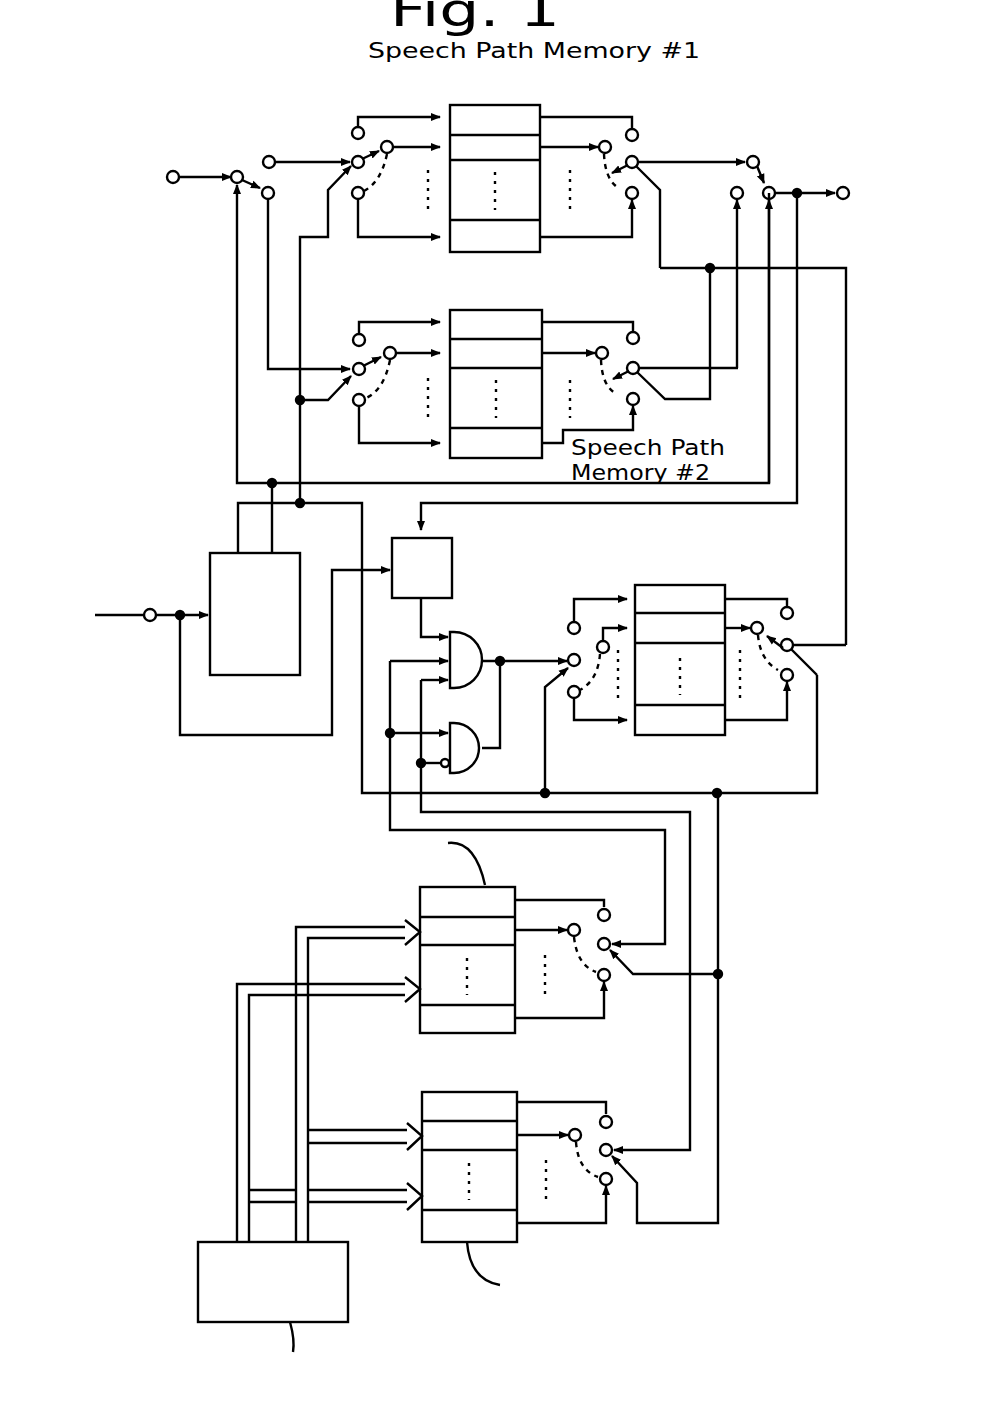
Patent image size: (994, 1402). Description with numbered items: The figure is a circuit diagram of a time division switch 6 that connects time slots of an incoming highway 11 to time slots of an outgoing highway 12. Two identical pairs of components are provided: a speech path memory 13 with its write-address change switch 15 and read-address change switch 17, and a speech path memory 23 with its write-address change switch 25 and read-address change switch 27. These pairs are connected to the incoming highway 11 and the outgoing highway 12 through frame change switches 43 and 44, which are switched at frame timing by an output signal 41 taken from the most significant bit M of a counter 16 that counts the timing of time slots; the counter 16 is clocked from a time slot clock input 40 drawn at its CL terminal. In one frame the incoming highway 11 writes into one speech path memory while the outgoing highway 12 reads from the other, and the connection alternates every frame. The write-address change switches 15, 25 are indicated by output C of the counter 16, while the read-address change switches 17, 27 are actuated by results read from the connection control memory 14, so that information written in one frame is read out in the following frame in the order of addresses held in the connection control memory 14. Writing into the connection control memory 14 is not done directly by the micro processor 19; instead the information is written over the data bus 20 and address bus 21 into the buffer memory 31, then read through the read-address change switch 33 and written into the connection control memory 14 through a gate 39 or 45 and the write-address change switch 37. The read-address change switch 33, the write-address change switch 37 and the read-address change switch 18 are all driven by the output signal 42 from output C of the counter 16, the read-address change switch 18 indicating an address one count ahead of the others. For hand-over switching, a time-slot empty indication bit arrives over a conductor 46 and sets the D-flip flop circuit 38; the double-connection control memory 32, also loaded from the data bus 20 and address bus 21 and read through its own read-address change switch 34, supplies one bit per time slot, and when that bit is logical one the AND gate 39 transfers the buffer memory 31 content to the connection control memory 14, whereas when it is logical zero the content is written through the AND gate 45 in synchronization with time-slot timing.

The time division switch 6 is at (745, 86).
The incoming highway 11 is at (195, 183).
The outgoing highway 12 is at (805, 197).
The speech path memory 13 is at (540, 100).
The connection control memory 14 is at (715, 583).
The write-address change switch 15 is at (350, 157).
The counter 16 is at (225, 552).
The read-address change switch 17 is at (640, 142).
The read-address change switch 18 is at (792, 630).
The micro processor 19 is at (348, 1288).
The data bus 20 is at (338, 983).
The address bus 21 is at (345, 925).
The speech path memory 23 is at (543, 303).
The write-address change switch 25 is at (352, 360).
The read-address change switch 27 is at (640, 352).
The buffer memory 31 is at (500, 887).
The double-connection control memory 32 is at (508, 1092).
The read-address change switch 33 is at (612, 935).
The switch for dual control memory 34 is at (612, 1140).
The write-address change switch 37 is at (568, 650).
The D-flip flop circuit 38 is at (455, 562).
The AND gate 39 is at (472, 630).
The time slot clock terminal (TSCL) 40 is at (162, 623).
The output signal 41 is at (363, 482).
The output signal 42 is at (337, 505).
The frame change switch 43 is at (252, 168).
The frame change switch 44 is at (768, 165).
The AND gate 45 is at (485, 765).
The conductor 46 is at (616, 505).